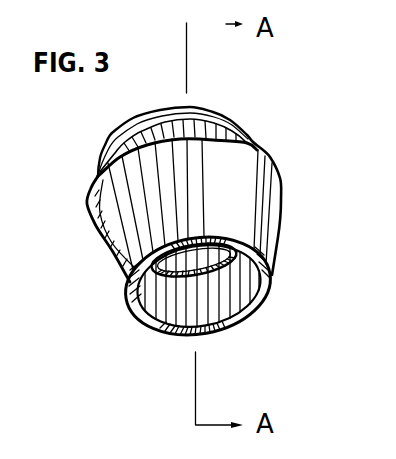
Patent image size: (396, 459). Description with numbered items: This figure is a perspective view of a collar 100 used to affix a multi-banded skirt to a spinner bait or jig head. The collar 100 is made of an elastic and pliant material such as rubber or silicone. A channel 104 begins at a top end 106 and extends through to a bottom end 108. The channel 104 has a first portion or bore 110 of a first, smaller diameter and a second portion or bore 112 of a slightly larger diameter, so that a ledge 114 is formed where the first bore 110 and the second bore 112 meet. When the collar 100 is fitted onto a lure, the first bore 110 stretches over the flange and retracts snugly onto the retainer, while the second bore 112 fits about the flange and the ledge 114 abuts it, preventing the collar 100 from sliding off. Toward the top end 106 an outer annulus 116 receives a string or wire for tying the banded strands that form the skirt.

The collar 100 is at (319, 139).
The channel 104 is at (219, 310).
The top end 106 is at (126, 117).
The bottom end 108 is at (278, 298).
The first bore 110 is at (175, 245).
The second bore 112 is at (187, 338).
The ledge 114 is at (181, 300).
The outer annulus 116 is at (201, 109).